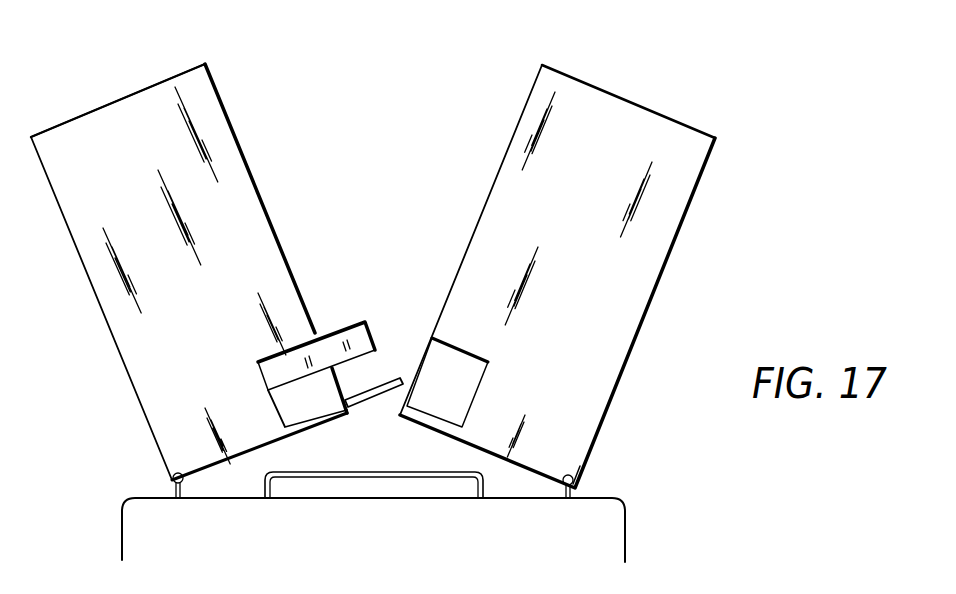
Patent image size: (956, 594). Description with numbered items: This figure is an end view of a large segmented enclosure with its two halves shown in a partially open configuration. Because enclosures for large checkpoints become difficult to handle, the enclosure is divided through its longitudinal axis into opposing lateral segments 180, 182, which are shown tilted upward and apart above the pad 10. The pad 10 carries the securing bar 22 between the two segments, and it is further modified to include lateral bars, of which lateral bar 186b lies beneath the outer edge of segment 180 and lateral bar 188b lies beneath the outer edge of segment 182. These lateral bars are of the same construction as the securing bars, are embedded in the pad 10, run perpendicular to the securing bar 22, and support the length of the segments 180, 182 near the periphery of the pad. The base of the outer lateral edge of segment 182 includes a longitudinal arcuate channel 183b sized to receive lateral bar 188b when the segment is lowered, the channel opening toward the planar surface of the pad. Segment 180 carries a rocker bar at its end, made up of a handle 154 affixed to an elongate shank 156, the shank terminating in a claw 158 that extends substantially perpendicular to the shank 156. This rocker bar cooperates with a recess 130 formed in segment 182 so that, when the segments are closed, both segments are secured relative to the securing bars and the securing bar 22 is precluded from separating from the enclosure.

The lateral segment 180 is at (110, 100).
The lateral segment 182 is at (622, 97).
The handle 154 is at (353, 333).
The shank 156 is at (340, 380).
The claw 158 is at (370, 395).
The recess 130 is at (476, 384).
The securing bar 22 is at (387, 473).
The pad 10 is at (620, 522).
The lateral bar 186b is at (172, 490).
The lateral bar 188b is at (578, 500).
The longitudinal arcuate channel 183b is at (578, 470).